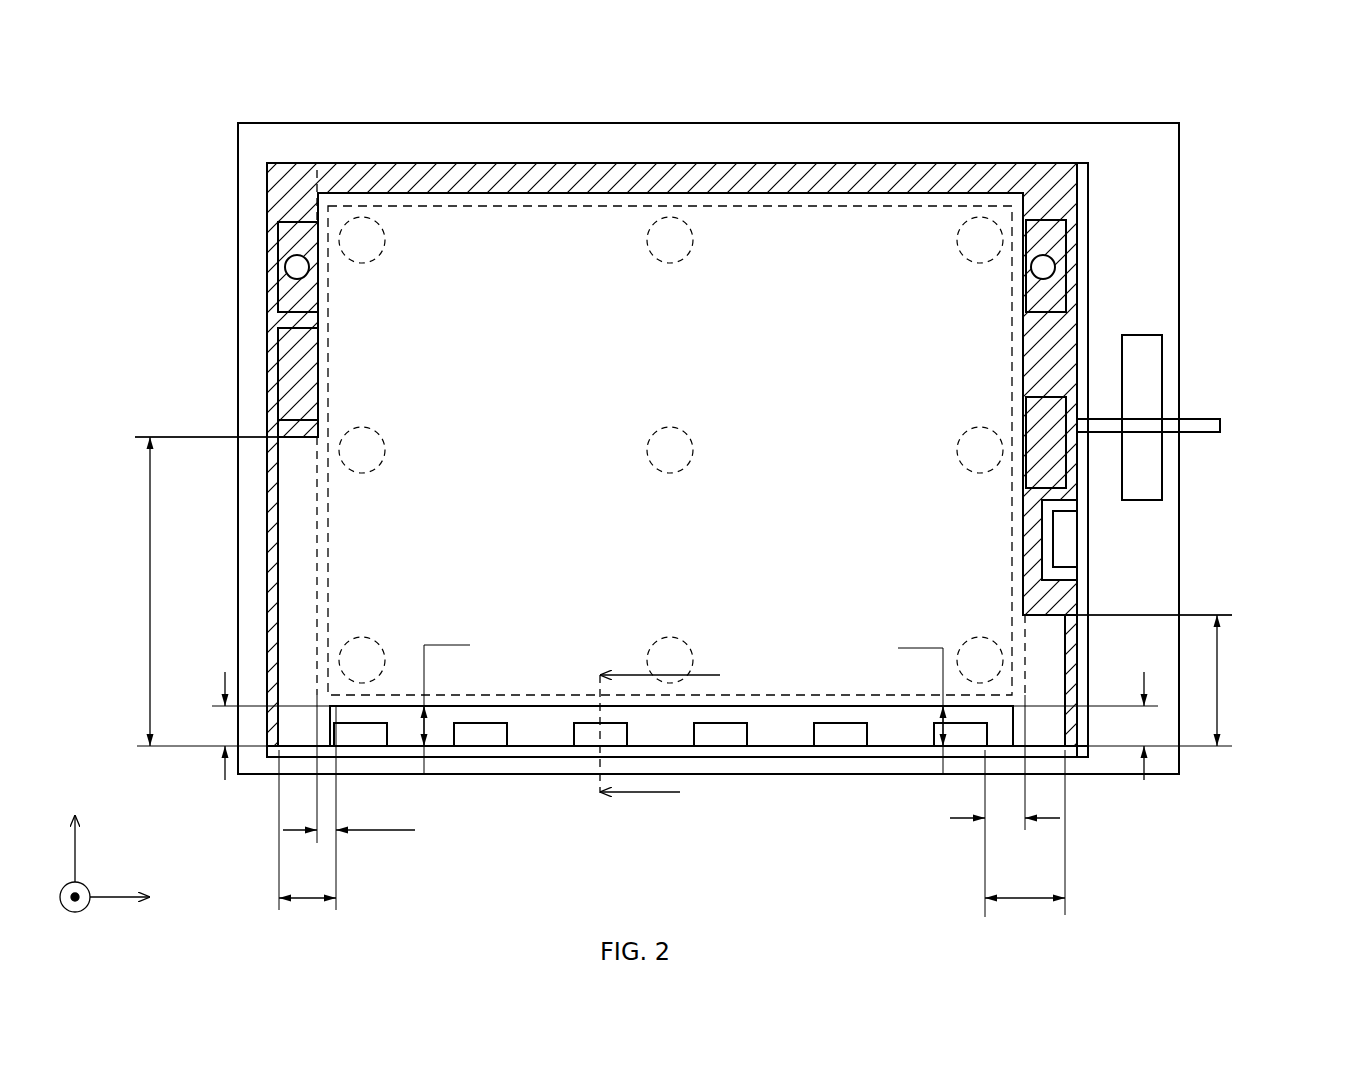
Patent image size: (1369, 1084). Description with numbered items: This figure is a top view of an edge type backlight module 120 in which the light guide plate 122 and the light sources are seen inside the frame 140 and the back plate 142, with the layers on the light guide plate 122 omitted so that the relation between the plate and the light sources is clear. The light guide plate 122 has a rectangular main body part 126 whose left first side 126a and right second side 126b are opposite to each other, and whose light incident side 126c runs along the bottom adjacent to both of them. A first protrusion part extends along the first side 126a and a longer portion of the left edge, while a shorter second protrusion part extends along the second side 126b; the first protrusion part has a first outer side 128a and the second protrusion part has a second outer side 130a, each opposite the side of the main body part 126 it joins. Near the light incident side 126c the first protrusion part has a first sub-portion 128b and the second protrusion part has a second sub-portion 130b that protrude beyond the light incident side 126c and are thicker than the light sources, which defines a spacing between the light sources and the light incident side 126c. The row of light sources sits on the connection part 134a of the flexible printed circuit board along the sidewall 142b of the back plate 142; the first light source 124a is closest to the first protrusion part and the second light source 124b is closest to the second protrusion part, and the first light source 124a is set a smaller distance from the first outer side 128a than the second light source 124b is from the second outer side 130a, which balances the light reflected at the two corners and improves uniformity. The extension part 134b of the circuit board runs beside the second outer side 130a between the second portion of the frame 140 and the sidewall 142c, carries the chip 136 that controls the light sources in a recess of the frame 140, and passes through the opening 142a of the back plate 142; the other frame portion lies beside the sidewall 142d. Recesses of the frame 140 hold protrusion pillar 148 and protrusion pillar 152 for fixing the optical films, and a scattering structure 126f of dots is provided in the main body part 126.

The backlight module 120 is at (1240, 150).
The light guide plate 122 is at (902, 885).
The first light source 124a is at (385, 740).
The second light source 124b is at (967, 737).
The main body part 126 is at (783, 698).
The first side 126a is at (317, 505).
The second side 126b is at (1030, 603).
The light incident side 126c is at (540, 710).
The scattering structure 126f is at (1013, 208).
The first outer side 128a is at (275, 525).
The first sub-portion 128b is at (452, 746).
The second outer side 130a is at (1072, 655).
The second sub-portion 130b is at (963, 708).
The connection part 134a is at (910, 757).
The extension part 134b is at (1082, 540).
The chip 136 is at (1067, 523).
The frame 140 is at (628, 97).
The back plate 142 is at (1163, 305).
The opening 142a is at (1143, 358).
The sidewall 142b is at (448, 757).
The sidewall 142c is at (1090, 470).
The sidewall 142d is at (267, 587).
The protrusion pillar 148 is at (285, 265).
The protrusion pillar 152 is at (1056, 270).